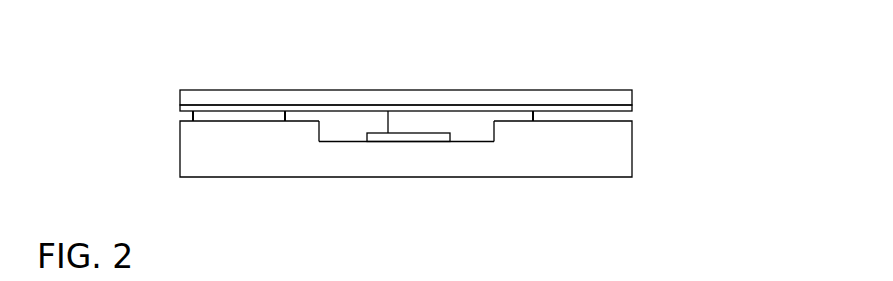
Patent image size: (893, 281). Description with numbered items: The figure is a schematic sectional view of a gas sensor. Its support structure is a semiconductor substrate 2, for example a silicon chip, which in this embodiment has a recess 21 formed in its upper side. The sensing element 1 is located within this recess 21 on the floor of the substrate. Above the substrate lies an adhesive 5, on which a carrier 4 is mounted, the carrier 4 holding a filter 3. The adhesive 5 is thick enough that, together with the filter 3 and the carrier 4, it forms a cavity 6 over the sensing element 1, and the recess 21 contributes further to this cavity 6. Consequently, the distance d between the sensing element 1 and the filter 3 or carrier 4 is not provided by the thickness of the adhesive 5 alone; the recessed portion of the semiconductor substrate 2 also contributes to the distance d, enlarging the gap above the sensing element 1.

The sensing element 1 is at (397, 141).
The semiconductor substrate 2 is at (210, 158).
The recess 21 is at (318, 132).
The filter 3 is at (488, 107).
The carrier 4 is at (580, 98).
The adhesive 5 is at (575, 117).
The cavity 6 is at (463, 135).
The distance d is at (388, 118).